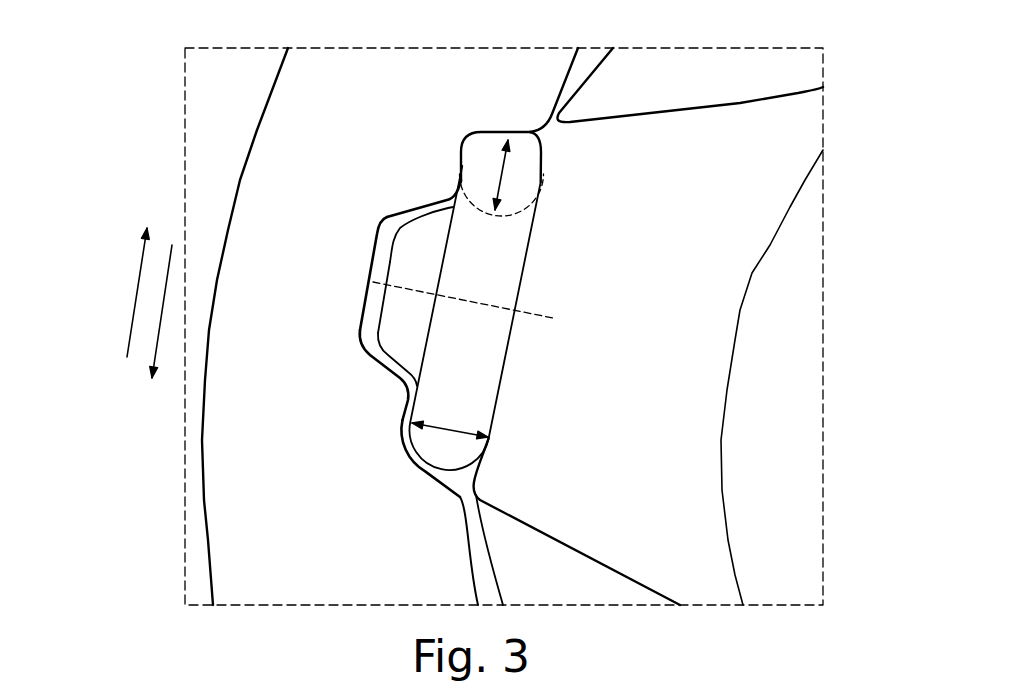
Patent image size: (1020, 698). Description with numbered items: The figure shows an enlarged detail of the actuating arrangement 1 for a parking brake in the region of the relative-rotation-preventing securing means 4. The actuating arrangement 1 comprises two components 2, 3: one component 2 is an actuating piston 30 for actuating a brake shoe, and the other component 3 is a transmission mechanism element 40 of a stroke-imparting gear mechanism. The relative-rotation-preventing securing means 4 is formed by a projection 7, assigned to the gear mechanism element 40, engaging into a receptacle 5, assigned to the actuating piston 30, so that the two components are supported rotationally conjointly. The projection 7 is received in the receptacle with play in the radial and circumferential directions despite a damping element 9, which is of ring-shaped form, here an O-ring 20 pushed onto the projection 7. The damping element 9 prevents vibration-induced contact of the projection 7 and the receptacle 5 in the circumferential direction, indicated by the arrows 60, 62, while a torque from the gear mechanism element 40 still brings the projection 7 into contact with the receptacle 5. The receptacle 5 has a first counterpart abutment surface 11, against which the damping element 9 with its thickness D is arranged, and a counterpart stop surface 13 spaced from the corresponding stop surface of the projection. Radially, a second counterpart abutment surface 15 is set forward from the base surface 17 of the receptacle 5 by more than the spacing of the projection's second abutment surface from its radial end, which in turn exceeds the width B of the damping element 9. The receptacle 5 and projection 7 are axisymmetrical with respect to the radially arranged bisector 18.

The actuating arrangement 1 is at (205, 97).
The component 2 is at (193, 326).
The actuating piston 30 is at (250, 213).
The component 3 is at (735, 326).
The transmission mechanism element 40 is at (747, 180).
The relative-rotation-preventing securing means 4 is at (383, 378).
The receptacle 5 is at (391, 229).
The projection 7 is at (523, 302).
The damping element 9 is at (577, 506).
The O-ring 20 is at (483, 408).
The first counterpart abutment surface 11 is at (500, 128).
The counterpart stop surface 13 is at (410, 207).
The second counterpart abutment surface 15 is at (458, 162).
The base surface 17 is at (365, 282).
The bisector 18 is at (548, 314).
The arrow 60 is at (138, 263).
The arrow 62 is at (147, 357).
The width of the damping element B is at (440, 428).
The thickness of the damping element D is at (503, 181).